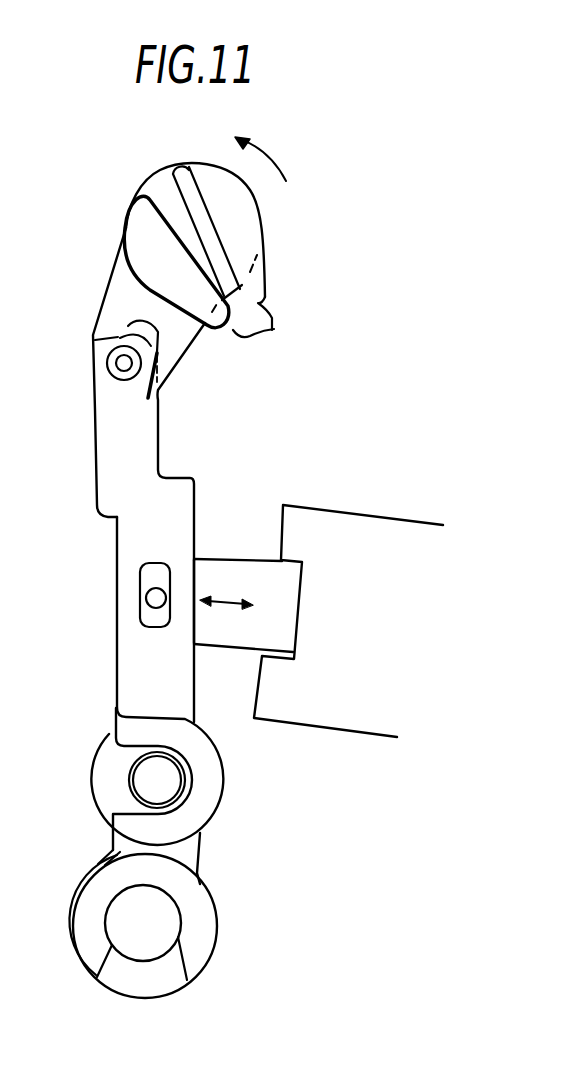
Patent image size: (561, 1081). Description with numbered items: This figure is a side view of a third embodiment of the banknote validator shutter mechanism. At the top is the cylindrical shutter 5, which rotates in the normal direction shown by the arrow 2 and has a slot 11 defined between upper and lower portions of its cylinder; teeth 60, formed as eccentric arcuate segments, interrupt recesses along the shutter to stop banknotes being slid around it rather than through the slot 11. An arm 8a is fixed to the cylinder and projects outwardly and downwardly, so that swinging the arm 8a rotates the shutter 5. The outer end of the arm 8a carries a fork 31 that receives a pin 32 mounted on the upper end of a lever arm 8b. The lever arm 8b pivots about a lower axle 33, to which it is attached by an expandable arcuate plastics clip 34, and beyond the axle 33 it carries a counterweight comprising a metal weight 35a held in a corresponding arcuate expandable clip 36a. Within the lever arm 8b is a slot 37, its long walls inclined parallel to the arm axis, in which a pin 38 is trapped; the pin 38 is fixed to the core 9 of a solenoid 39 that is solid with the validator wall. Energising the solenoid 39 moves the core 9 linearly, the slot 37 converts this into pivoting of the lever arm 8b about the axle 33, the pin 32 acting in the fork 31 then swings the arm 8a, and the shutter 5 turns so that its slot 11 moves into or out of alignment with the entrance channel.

The arrow 2 is at (264, 159).
The cylindrical shutter 5 is at (200, 163).
The arm 8a is at (182, 357).
The lever arm 8b is at (200, 478).
The actuator core 9 is at (230, 648).
The slot 11 is at (170, 200).
The fork 31 is at (96, 340).
The pin 32 is at (116, 369).
The lower axle 33 is at (140, 783).
The expandable arcuate clip 34 is at (190, 803).
The metal weight 35a is at (168, 977).
The arcuate expandable clip 36a is at (200, 928).
The slot 37 is at (147, 618).
The pin 38 is at (148, 596).
The solenoid 39 is at (345, 522).
The teeth 60 is at (271, 322).